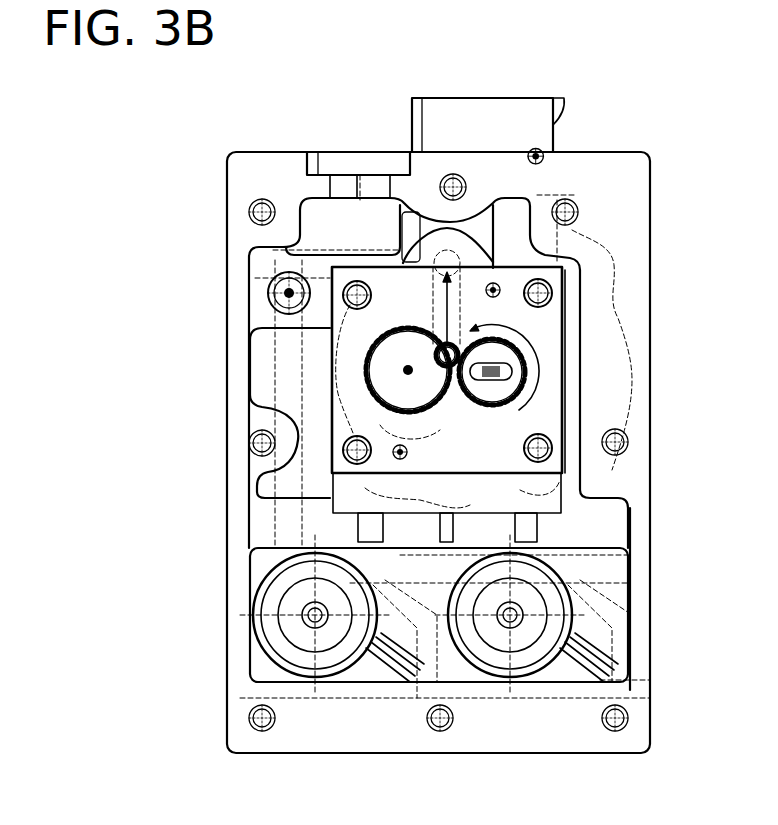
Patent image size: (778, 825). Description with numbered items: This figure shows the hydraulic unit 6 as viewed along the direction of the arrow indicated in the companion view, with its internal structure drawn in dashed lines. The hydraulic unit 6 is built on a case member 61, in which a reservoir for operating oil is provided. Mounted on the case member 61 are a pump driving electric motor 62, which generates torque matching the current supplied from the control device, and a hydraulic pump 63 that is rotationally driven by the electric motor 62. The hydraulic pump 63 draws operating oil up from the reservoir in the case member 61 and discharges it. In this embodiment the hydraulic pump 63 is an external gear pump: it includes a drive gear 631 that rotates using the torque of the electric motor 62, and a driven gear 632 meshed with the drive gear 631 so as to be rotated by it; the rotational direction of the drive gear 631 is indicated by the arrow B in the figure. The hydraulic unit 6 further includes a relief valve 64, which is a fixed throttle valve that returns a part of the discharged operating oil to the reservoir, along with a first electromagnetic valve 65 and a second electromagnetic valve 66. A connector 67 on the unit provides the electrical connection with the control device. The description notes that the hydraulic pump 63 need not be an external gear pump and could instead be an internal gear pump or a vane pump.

The hydraulic unit 6 is at (248, 130).
The case member 61 is at (618, 152).
The pump driving electric motor 62 is at (627, 333).
The hydraulic pump 63 is at (327, 370).
The drive gear 631 is at (483, 395).
The driven gear 632 is at (414, 395).
The relief valve 64 is at (268, 281).
The first electromagnetic valve 65 is at (328, 637).
The second electromagnetic valve 66 is at (523, 637).
The connector 67 is at (517, 98).